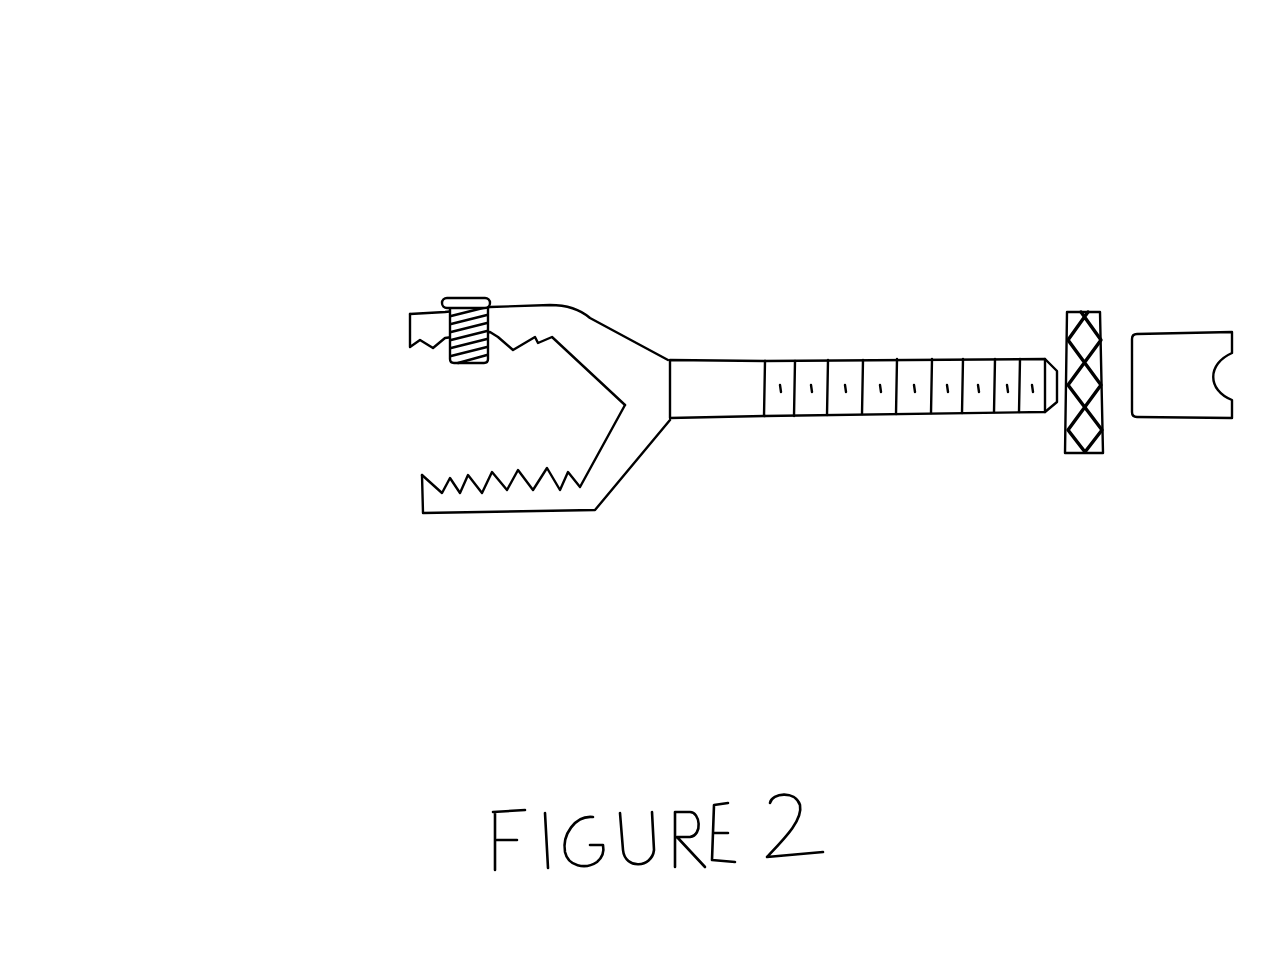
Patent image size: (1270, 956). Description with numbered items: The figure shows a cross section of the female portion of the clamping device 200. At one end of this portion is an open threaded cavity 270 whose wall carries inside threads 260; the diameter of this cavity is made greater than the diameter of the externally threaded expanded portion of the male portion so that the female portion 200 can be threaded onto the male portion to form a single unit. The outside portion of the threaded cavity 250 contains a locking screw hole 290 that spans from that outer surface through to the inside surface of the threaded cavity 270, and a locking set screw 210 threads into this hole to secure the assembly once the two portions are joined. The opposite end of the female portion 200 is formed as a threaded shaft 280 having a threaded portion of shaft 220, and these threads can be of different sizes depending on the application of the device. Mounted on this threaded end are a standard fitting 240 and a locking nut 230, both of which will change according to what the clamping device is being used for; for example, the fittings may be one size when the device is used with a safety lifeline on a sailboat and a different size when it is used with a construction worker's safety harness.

The female portion of clamping device 200 is at (263, 129).
The locking set screw 210 is at (482, 298).
The threaded portion of shaft 220 is at (885, 358).
The locking nut 230 is at (1088, 453).
The standard fitting 240 is at (1178, 417).
The outside portion of threaded cavity 250 is at (518, 515).
The inside threads 260 is at (450, 477).
The threaded cavity 270 is at (453, 400).
The threaded shaft 280 is at (745, 418).
The locking screw 290 is at (488, 328).